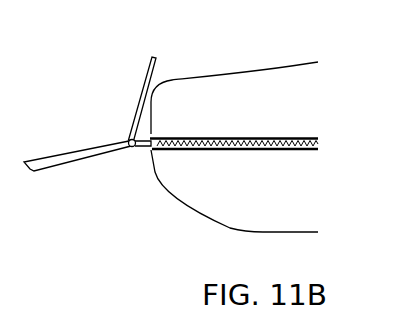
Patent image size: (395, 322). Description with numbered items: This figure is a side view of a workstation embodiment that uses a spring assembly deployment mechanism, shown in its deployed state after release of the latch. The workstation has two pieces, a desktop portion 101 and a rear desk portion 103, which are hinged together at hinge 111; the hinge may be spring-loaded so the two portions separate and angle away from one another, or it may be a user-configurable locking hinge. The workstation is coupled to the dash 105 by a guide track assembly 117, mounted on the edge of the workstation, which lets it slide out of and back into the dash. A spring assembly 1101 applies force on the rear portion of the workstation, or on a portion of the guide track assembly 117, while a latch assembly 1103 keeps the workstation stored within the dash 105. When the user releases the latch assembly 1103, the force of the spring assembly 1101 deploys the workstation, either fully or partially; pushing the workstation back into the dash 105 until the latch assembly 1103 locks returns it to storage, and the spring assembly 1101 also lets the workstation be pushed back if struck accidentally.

The desktop portion 101 is at (67, 154).
The rear desk portion 103 is at (143, 87).
The dash 105 is at (234, 102).
The hinge 111 is at (132, 147).
The guide tracks 117 is at (227, 151).
The spring assembly 1101 is at (270, 137).
The latch assembly 1103 is at (153, 129).